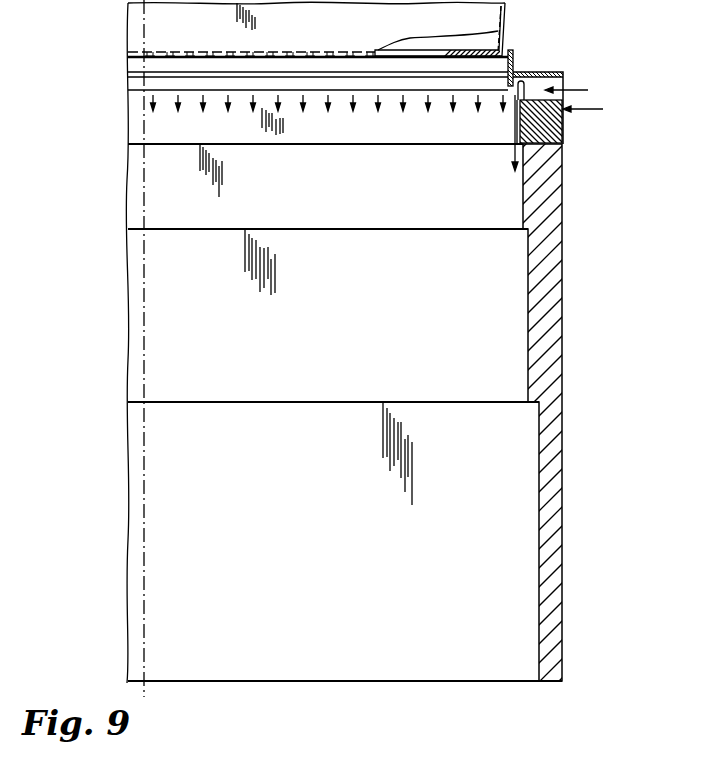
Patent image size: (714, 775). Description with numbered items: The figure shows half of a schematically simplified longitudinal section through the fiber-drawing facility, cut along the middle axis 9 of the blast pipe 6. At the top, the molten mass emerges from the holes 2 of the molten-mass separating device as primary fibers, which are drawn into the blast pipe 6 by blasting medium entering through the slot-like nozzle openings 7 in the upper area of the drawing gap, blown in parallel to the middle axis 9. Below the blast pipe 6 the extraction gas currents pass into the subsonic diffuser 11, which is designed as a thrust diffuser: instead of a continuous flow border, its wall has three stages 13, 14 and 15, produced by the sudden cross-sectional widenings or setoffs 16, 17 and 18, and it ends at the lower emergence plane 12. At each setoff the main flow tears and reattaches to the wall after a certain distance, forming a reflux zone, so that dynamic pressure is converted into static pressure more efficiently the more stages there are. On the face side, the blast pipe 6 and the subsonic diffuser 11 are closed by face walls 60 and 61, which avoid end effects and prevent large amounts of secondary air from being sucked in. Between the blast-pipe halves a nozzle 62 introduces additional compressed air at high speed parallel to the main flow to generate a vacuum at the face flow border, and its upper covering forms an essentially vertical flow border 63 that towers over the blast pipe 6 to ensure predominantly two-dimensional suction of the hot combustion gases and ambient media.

The holes 2 is at (403, 27).
The blast pipe 6 is at (580, 102).
The slot-like nozzle openings 7 is at (361, 92).
The middle axis 9 is at (145, 494).
The subsonic diffuser 11 is at (582, 503).
The emergence plane 12 is at (372, 684).
The first stage 13 is at (316, 195).
The second stage 14 is at (309, 337).
The third stage 15 is at (347, 609).
The setoff 16 is at (460, 149).
The setoff 17 is at (396, 237).
The setoff 18 is at (348, 409).
The face wall 60 is at (553, 133).
The face wall 61 is at (554, 268).
The nozzle 62 is at (518, 97).
The vertical flow border 63 is at (513, 60).